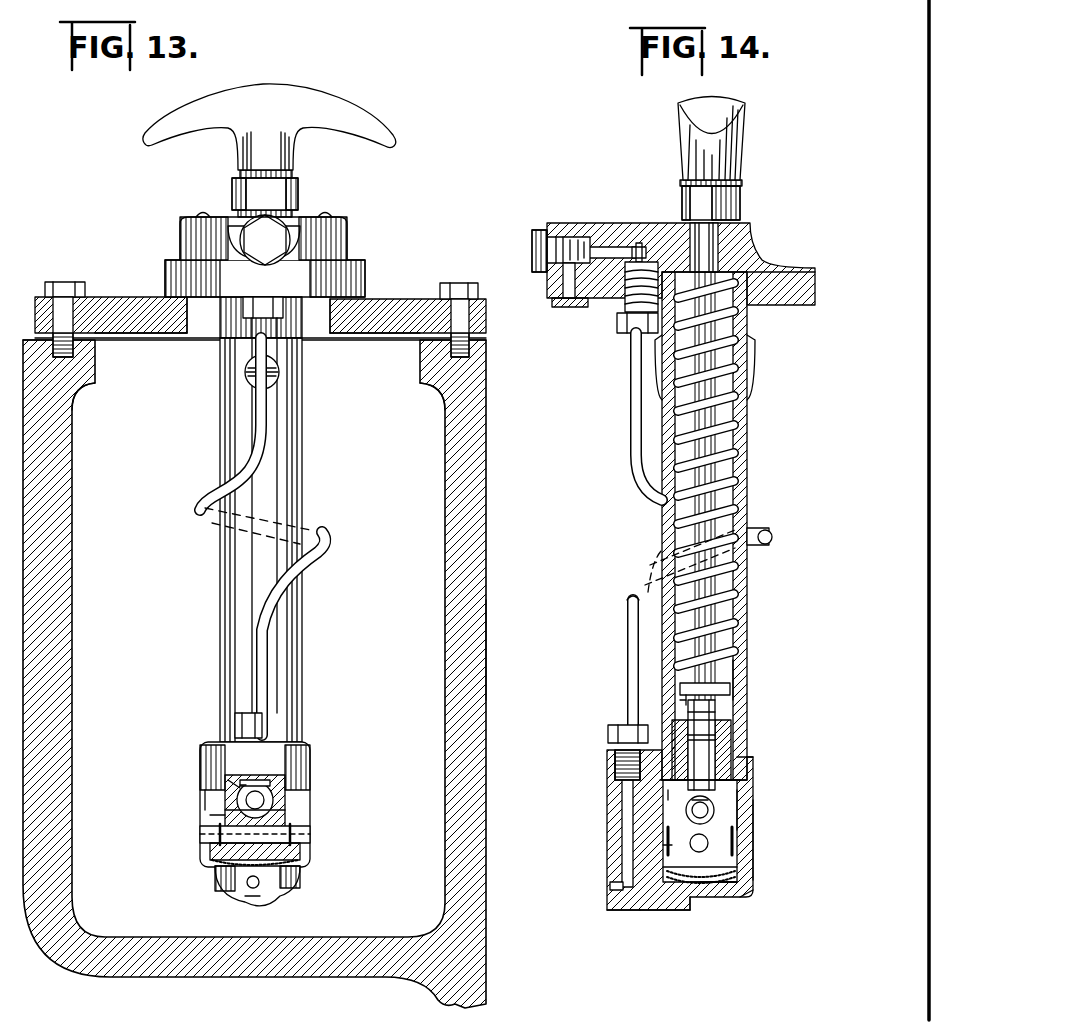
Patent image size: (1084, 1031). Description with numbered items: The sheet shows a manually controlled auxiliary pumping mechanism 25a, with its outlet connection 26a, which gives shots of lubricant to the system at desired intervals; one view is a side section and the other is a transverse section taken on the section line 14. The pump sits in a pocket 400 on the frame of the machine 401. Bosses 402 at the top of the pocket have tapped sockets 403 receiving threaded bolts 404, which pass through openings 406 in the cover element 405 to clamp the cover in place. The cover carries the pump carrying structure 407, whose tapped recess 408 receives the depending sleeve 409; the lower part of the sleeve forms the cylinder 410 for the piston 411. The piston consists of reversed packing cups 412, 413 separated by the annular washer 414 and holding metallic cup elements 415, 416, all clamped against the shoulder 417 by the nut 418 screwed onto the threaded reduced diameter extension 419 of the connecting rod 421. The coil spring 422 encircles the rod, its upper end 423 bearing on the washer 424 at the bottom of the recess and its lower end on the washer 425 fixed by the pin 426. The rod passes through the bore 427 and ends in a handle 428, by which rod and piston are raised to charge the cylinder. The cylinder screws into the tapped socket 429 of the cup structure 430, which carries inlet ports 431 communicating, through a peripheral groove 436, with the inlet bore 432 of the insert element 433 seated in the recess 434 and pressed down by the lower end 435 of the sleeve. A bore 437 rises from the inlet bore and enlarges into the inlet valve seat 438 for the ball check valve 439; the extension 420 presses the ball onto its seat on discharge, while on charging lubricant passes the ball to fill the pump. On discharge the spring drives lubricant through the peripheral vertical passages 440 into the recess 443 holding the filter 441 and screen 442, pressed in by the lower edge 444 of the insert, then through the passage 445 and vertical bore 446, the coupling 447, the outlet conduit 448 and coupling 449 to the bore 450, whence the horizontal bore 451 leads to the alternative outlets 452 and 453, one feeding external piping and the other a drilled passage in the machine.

In FIG. 13, the section line 14 is at (245, 70).
In FIG. 13, the auxiliary pumping mechanism 25a is at (304, 578).
In FIG. 14, the auxiliary pumping mechanism 25a is at (750, 480).
In FIG. 14, the outlet connection 26a is at (545, 252).
In FIG. 13, the pocket 400 is at (190, 978).
In FIG. 13, the frame of the machine 401 is at (478, 640).
In FIG. 13, the enlargements or bosses 402 is at (85, 388).
In FIG. 13, the tapped sockets 403 is at (75, 352).
In FIG. 13, the threaded bolts 404 is at (75, 312).
In FIG. 13, the cover element 405 is at (128, 312).
In FIG. 13, the openings 406 is at (58, 282).
In FIG. 13, the pump carrying structure 407 is at (345, 262).
In FIG. 14, the tapped recess 408 is at (757, 282).
In FIG. 13, the depending sleeve 409 is at (305, 605).
In FIG. 14, the depending sleeve 409 is at (750, 445).
In FIG. 14, the cylinder 410 is at (740, 672).
In FIG. 14, the piston 411 is at (735, 712).
In FIG. 14, the packing cup 412 is at (735, 728).
In FIG. 14, the packing cup 413 is at (740, 745).
In FIG. 14, the annular washer 414 is at (686, 736).
In FIG. 14, the metallic cup element 415 is at (680, 702).
In FIG. 14, the metallic cup element 416 is at (625, 762).
In FIG. 14, the shoulder 417 is at (688, 714).
In FIG. 14, the nut 418 is at (745, 785).
In FIG. 14, the threaded reduced diameter extension 419 is at (700, 822).
In FIG. 13, the extension 420 is at (273, 792).
In FIG. 14, the extension 420 is at (716, 815).
In FIG. 14, the connecting rod 421 is at (705, 625).
In FIG. 13, the coil spring 422 is at (245, 372).
In FIG. 14, the coil spring 422 is at (725, 412).
In FIG. 14, the upper end of spring 423 is at (672, 265).
In FIG. 14, the washer 424 is at (742, 258).
In FIG. 14, the washer 425 is at (678, 690).
In FIG. 14, the pin 426 is at (735, 690).
In FIG. 14, the bore 427 is at (682, 245).
In FIG. 13, the handle 428 is at (325, 107).
In FIG. 14, the handle 428 is at (690, 116).
In FIG. 14, the tapped socket 429 is at (745, 765).
In FIG. 13, the cup structure 430 is at (302, 762).
In FIG. 14, the cup structure 430 is at (745, 860).
In FIG. 13, the inlet ports 431 is at (225, 835).
In FIG. 13, the inlet bore 432 is at (215, 846).
In FIG. 14, the inlet bore 432 is at (709, 842).
In FIG. 13, the insert element 433 is at (290, 805).
In FIG. 14, the insert element 433 is at (745, 805).
In FIG. 13, the recess 434 is at (300, 818).
In FIG. 14, the lower end of sleeve 435 is at (680, 808).
In FIG. 13, the peripheral groove 436 is at (290, 850).
In FIG. 14, the peripheral groove 436 is at (675, 870).
In FIG. 13, the bore 437 is at (210, 815).
In FIG. 14, the bore 437 is at (725, 897).
In FIG. 13, the inlet valve seat 438 is at (205, 800).
In FIG. 13, the ball check valve 439 is at (230, 795).
In FIG. 14, the ball check valve 439 is at (668, 835).
In FIG. 14, the peripheral vertical passages 440 is at (680, 878).
In FIG. 13, the filter 441 is at (240, 787).
In FIG. 14, the filter 441 is at (700, 897).
In FIG. 14, the screen 442 is at (668, 912).
In FIG. 14, the recess 443 is at (730, 895).
In FIG. 13, the lower edge of insert 444 is at (290, 878).
In FIG. 14, the lower edge of insert 444 is at (735, 886).
In FIG. 13, the passage 445 is at (245, 898).
In FIG. 14, the passage 445 is at (620, 912).
In FIG. 14, the vertical bore 446 is at (663, 848).
In FIG. 13, the coupling 447 is at (236, 722).
In FIG. 14, the coupling 447 is at (608, 735).
In FIG. 13, the outlet conduit 448 is at (262, 642).
In FIG. 14, the outlet conduit 448 is at (635, 612).
In FIG. 13, the coupling 449 is at (285, 320).
In FIG. 14, the coupling 449 is at (620, 333).
In FIG. 14, the bore 450 is at (625, 250).
In FIG. 14, the horizontal bore 451 is at (600, 246).
In FIG. 13, the outlet 452 is at (265, 240).
In FIG. 14, the outlet 452 is at (545, 236).
In FIG. 14, the outlet 453 is at (568, 307).